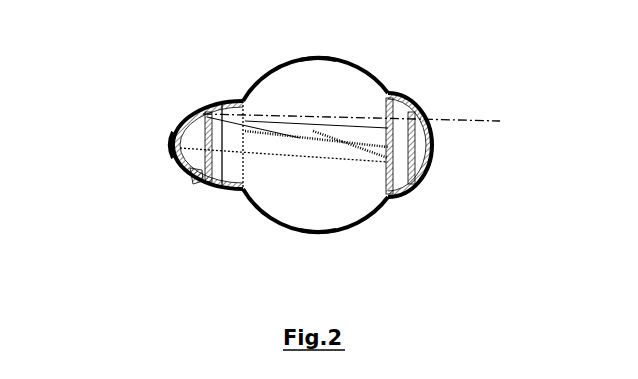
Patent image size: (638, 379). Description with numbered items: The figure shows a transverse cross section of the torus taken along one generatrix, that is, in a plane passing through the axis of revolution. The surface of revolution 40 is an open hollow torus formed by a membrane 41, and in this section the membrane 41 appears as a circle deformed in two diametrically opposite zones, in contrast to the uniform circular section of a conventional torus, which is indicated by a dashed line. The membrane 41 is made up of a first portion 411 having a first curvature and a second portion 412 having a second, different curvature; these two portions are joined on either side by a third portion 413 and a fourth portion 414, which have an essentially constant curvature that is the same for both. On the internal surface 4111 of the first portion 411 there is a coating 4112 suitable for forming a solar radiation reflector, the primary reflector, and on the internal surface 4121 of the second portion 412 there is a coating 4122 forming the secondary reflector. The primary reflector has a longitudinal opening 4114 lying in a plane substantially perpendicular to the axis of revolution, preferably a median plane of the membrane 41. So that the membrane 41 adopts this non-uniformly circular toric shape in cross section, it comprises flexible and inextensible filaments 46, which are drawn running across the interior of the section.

The surface of revolution 40 is at (124, 42).
The membrane 41 is at (353, 68).
The first portion 411 is at (190, 114).
The internal surface of first portion 4111 is at (213, 190).
The coating 4112 is at (238, 97).
The longitudinal opening 4114 is at (170, 141).
The second portion 412 is at (433, 146).
The internal surface of second portion 4121 is at (395, 104).
The coating 4122 is at (412, 168).
The third portion 413 is at (288, 57).
The fourth portion 414 is at (303, 233).
The flexible and inextensible filaments 46 is at (340, 131).